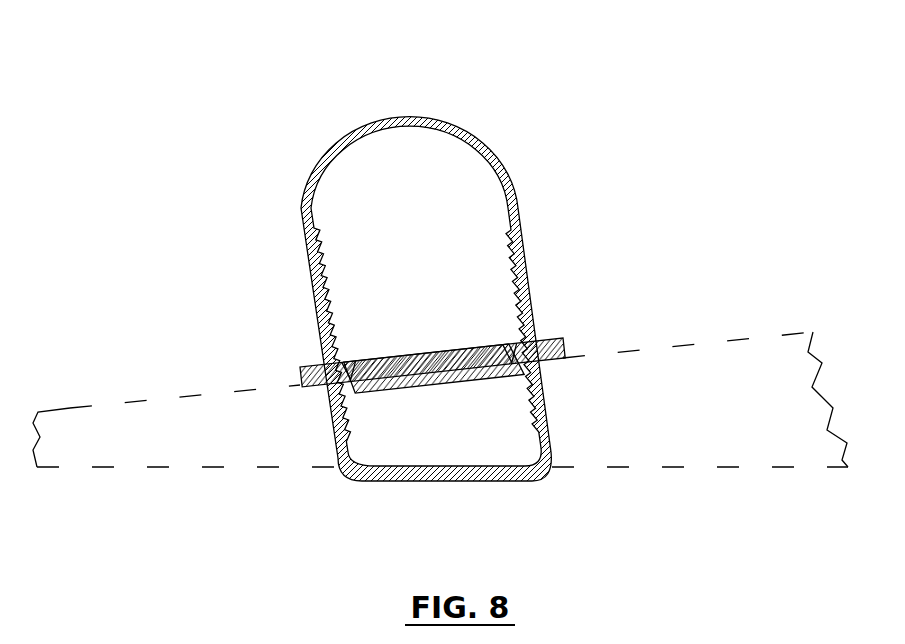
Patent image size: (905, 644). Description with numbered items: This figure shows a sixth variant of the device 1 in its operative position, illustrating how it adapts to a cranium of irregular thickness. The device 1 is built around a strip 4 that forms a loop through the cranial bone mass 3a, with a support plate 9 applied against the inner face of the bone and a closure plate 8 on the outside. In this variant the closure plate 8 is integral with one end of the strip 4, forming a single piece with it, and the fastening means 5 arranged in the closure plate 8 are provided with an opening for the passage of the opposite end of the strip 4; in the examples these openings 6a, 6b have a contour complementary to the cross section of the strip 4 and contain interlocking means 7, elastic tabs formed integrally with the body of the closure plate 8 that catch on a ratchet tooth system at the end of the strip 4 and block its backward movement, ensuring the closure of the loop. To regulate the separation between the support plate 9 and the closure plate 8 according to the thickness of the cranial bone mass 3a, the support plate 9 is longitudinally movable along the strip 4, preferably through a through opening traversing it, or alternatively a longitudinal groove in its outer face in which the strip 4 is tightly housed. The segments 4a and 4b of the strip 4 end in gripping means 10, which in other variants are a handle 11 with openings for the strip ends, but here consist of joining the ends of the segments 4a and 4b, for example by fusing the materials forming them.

The device 1 is at (193, 97).
The cranial bone mass 3a is at (688, 420).
The strip 4 is at (554, 415).
The strip segment 4a is at (312, 301).
The strip segment 4b is at (523, 263).
The fastening means 5 is at (349, 348).
The opening 6a is at (340, 359).
The opening 6b is at (524, 349).
The interlocking means 7 is at (300, 368).
The closure plate 8 is at (428, 357).
The support plate 9 is at (413, 477).
The gripping means 10 is at (492, 127).
The handle 11 is at (298, 203).